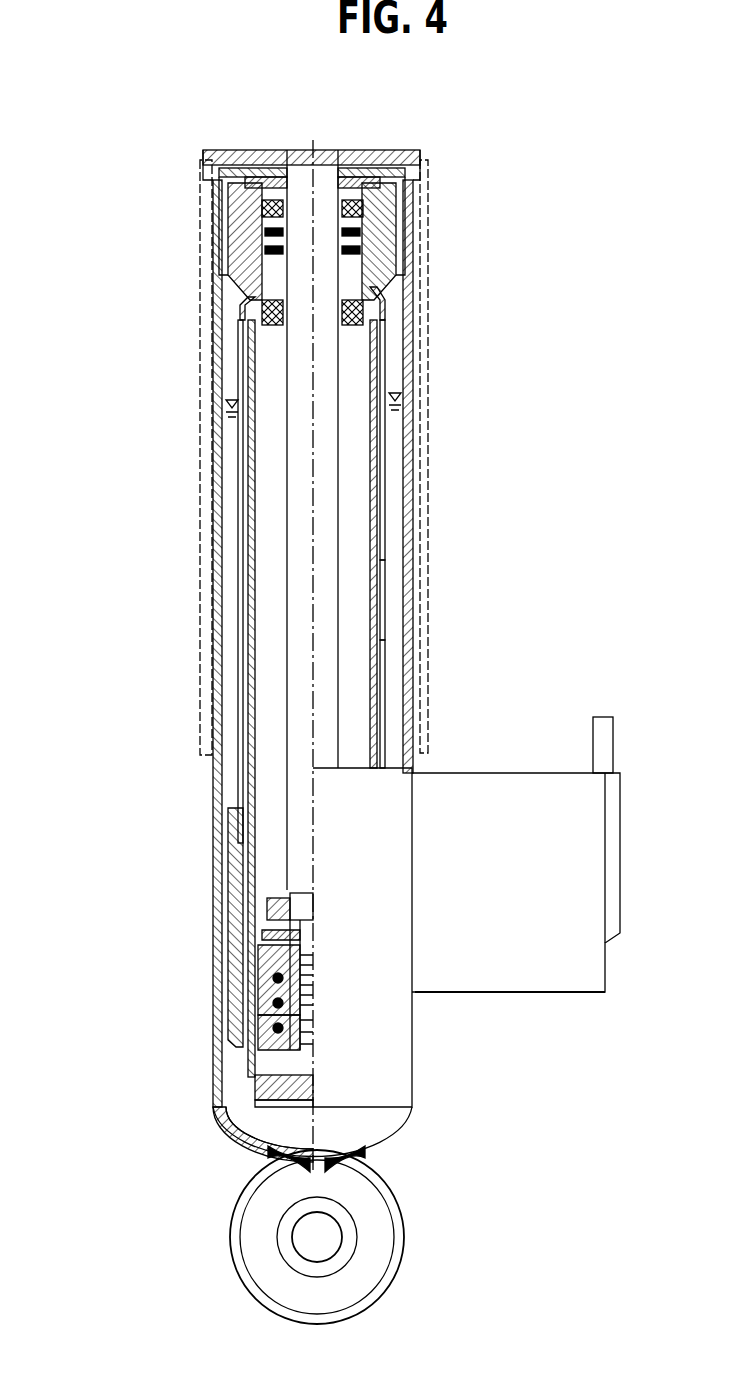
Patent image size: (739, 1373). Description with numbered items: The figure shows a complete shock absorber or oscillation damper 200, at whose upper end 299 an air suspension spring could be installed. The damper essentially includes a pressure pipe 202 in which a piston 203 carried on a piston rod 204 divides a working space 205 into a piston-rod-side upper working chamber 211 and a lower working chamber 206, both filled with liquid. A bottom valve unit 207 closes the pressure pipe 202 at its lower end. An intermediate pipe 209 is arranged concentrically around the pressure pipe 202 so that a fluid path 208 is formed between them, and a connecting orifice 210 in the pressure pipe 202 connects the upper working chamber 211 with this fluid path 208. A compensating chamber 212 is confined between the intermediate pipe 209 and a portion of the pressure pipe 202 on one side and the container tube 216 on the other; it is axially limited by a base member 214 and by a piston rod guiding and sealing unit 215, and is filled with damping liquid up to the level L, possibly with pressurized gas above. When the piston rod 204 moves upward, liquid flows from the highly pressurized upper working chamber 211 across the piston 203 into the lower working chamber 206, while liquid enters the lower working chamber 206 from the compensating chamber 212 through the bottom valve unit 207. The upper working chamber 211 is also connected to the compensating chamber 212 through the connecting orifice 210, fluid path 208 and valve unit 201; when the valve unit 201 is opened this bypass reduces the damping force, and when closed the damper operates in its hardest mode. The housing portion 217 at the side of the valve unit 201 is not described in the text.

The shock absorber or oscillation damper 200 is at (162, 635).
The upper end 299 is at (178, 165).
The piston rod guiding and sealing unit 215 is at (383, 258).
The connecting orifice 210 is at (385, 362).
The level L is at (232, 398).
The working space 205 is at (265, 434).
The piston rod 204 is at (330, 455).
The upper working chamber 211 is at (265, 511).
The container tube 216 is at (410, 497).
The compensating chamber 212 is at (390, 540).
The fluid path 208 is at (390, 598).
The pressure pipe 202 is at (372, 628).
The intermediate pipe 209 is at (393, 668).
The valve unit 201 is at (519, 768).
The reservoir bottom 217 is at (538, 993).
The piston 203 is at (263, 971).
The lower working chamber 206 is at (265, 1034).
The bottom valve unit 207 is at (255, 1095).
The base member 214 is at (225, 1112).